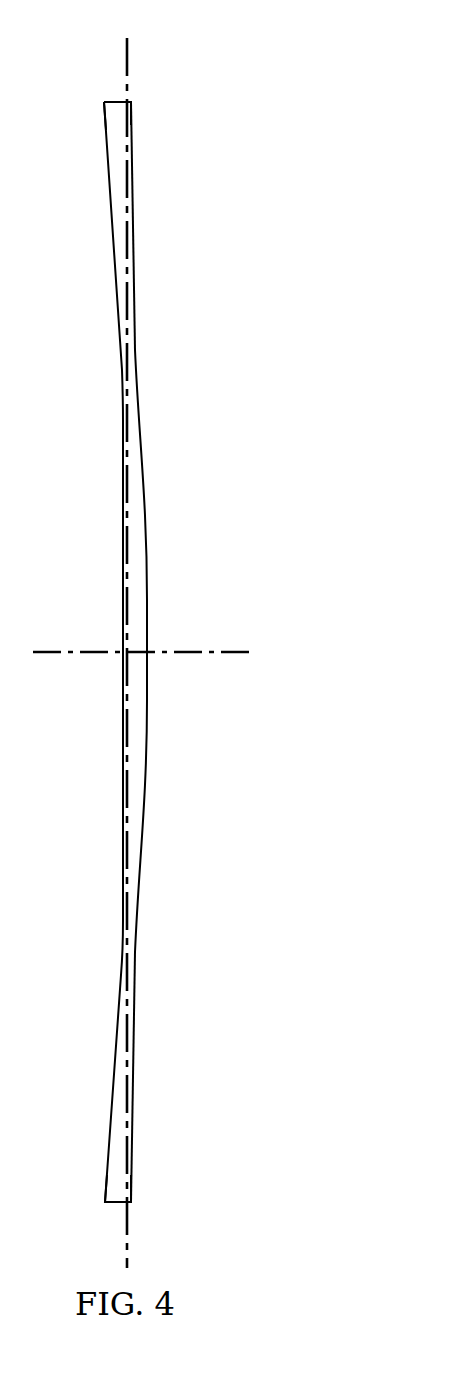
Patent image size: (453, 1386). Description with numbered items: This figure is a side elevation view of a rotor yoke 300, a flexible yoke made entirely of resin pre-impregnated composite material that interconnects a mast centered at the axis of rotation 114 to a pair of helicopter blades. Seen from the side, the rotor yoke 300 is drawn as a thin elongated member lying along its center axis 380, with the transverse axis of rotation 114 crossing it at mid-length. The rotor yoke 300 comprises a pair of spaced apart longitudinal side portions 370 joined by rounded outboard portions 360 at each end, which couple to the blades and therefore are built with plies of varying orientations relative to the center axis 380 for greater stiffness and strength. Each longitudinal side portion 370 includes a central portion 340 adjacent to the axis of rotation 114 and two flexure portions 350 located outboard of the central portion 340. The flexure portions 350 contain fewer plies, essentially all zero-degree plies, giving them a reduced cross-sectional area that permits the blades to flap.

The rotor yoke 300 is at (126, 611).
The center axis 380 is at (130, 55).
The rounded outboard portions 360 is at (113, 130).
The longitudinal side portions 370 is at (120, 253).
The flexure portions 350 is at (134, 348).
The central portion 340 is at (140, 565).
The axis of rotation 114 is at (173, 654).